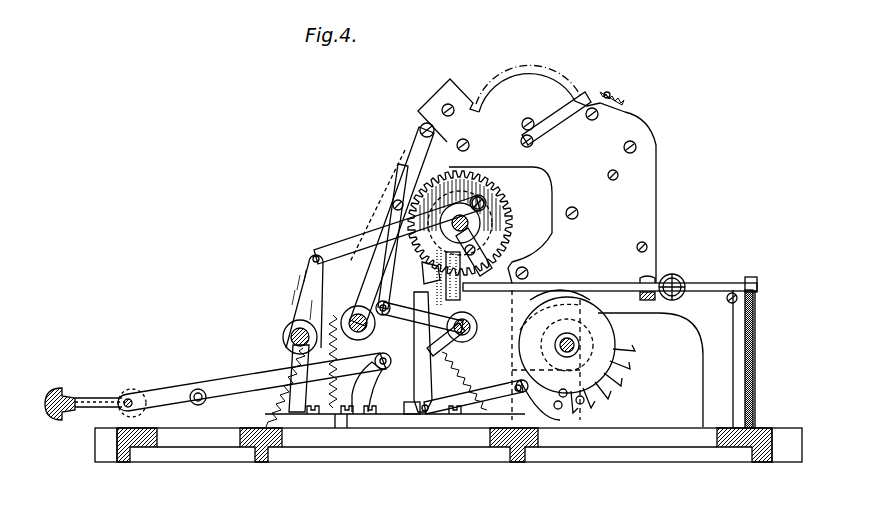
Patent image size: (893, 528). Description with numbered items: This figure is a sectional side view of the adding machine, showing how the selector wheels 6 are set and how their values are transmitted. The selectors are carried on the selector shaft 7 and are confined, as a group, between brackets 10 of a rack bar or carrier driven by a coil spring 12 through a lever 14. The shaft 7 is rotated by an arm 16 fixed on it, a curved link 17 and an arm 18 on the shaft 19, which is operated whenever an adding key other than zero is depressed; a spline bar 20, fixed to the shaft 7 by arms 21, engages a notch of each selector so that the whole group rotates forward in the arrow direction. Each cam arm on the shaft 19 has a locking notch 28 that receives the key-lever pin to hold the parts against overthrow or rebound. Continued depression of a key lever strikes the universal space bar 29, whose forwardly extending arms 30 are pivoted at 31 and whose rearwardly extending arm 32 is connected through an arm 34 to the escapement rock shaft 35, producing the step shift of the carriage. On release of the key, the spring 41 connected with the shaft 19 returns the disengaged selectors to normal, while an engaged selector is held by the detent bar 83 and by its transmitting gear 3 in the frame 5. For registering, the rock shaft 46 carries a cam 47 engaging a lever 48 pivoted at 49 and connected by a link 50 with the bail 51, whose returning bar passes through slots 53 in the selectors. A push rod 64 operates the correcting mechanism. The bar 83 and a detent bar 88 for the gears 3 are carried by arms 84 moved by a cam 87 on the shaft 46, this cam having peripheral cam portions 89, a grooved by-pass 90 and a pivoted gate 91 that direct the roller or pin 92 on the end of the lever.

The transmitting gear 3 is at (450, 146).
The frame 5 is at (576, 246).
The selector wheel 6 is at (425, 183).
The selector shaft 7 is at (482, 224).
The bracket 10 is at (500, 257).
The coil spring 12 is at (674, 275).
The lever 14 is at (577, 284).
The arm 16 is at (484, 214).
The curved link 17 is at (340, 249).
The arm 18 is at (308, 280).
The shaft 19 is at (291, 337).
The spline bar 20 is at (470, 252).
The arm 21 is at (535, 273).
The locking notch 28 is at (197, 392).
The universal space bar 29 is at (190, 398).
The forwardly extending arm 30 is at (154, 396).
The pivot 31 is at (118, 413).
The rearwardly extending arm 32 is at (259, 382).
The arm 34 is at (426, 319).
The escapement rock shaft 35 is at (445, 336).
The spring 41 is at (294, 368).
The rock shaft 46 is at (615, 330).
The cam 47 is at (613, 348).
The lever 48 is at (514, 389).
The pivot 49 is at (558, 392).
The link 50 is at (430, 372).
The bail 51 is at (422, 270).
The slot 53 is at (487, 200).
The push rod 64 is at (411, 404).
The spline or detent bar 83 is at (393, 204).
The arm 84 is at (390, 258).
The cam 87 is at (600, 395).
The detent bar 88 is at (420, 131).
The peripheral cam portion 89 is at (583, 403).
The grooved by-pass 90 is at (582, 320).
The gate 91 is at (612, 368).
The roller or pin 92 is at (559, 409).